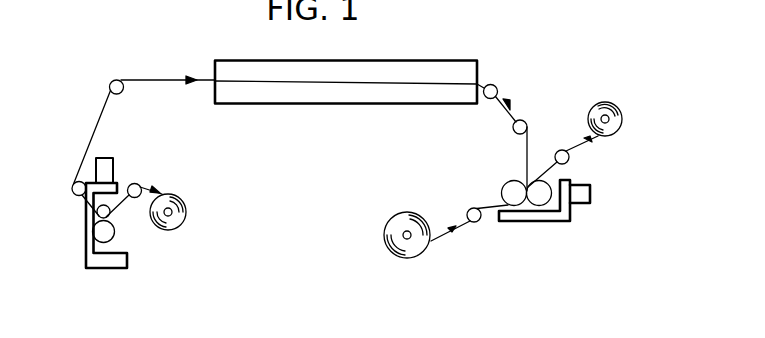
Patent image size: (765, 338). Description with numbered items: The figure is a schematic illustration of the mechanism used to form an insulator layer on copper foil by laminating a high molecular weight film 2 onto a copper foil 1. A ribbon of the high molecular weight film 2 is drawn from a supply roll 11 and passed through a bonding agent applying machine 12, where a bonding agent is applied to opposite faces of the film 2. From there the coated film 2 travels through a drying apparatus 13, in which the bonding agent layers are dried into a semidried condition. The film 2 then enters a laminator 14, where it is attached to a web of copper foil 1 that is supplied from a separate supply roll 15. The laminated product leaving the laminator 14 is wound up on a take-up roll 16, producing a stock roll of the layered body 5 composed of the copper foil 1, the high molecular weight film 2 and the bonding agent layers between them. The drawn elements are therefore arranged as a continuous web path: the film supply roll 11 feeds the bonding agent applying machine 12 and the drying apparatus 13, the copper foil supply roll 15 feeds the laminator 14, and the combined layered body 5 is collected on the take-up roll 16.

The copper foil 1 is at (593, 141).
The high molecular weight film 2 is at (172, 195).
The layered body 5 is at (438, 238).
The supply roll 11 is at (175, 231).
The bonding agent applying machine 12 is at (84, 232).
The drying apparatus 13 is at (278, 105).
The laminator 14 is at (538, 224).
The supply roll 15 is at (622, 115).
The take-up roll 16 is at (410, 240).